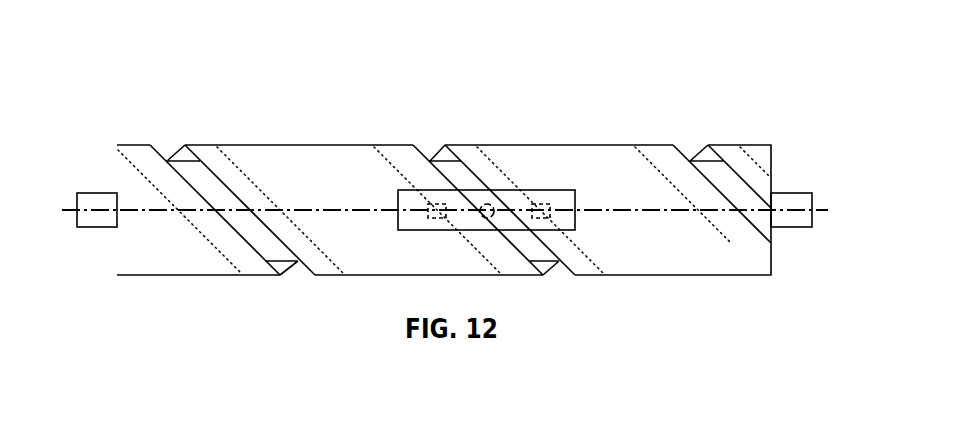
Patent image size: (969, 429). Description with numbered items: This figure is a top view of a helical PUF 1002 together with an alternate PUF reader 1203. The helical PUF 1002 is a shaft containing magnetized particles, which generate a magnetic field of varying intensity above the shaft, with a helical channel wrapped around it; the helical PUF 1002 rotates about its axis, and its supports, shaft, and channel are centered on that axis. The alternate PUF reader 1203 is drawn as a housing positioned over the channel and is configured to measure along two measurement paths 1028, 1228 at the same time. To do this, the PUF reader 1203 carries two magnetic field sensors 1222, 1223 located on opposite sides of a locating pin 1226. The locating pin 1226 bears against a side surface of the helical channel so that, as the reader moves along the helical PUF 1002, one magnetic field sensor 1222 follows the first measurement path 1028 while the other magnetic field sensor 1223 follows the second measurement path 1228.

The helical PUF 1002 is at (140, 96).
The first measurement path 1028 is at (387, 160).
The PUF reader 1203 is at (398, 190).
The magnetic field sensor 1222 is at (429, 218).
The locating pin 1226 is at (492, 205).
The magnetic field sensor 1223 is at (545, 203).
The second measurement path 1228 is at (580, 247).